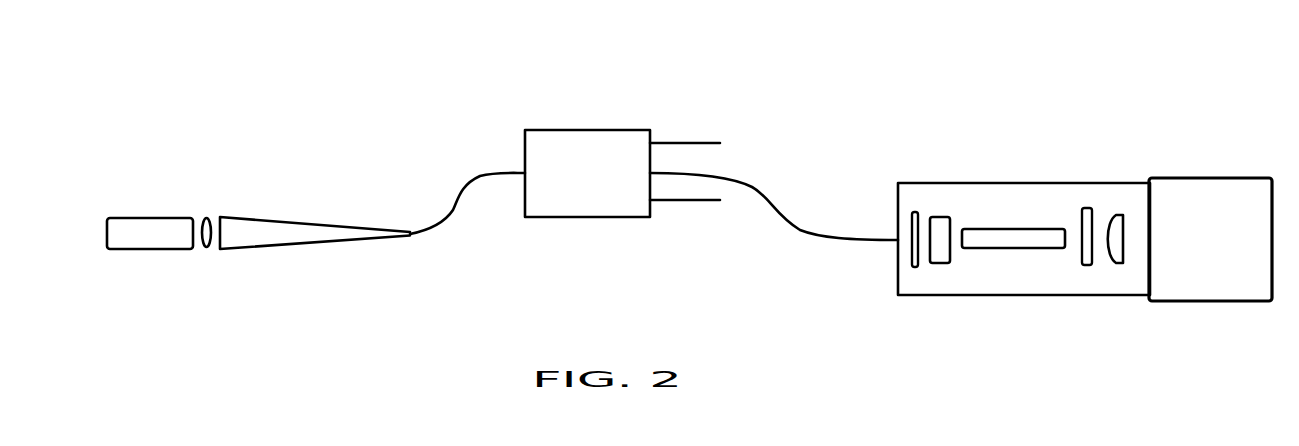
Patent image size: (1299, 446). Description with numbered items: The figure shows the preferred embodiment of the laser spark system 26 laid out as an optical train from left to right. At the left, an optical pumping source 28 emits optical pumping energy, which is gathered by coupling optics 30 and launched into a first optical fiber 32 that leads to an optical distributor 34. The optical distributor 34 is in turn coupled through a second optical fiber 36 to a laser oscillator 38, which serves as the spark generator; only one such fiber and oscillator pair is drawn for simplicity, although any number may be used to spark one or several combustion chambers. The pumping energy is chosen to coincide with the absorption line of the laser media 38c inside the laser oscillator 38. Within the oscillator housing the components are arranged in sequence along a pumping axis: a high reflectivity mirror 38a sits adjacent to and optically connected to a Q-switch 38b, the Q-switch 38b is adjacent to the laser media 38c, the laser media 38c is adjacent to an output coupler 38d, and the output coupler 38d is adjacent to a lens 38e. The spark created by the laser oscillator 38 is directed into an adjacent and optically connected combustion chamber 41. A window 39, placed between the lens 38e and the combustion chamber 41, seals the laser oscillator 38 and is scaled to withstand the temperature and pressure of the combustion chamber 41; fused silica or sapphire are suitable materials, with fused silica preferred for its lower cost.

The laser spark system 26 is at (673, 105).
The optical pumping source 28 is at (127, 218).
The coupling optics 30 is at (310, 240).
The first optical fiber 32 is at (422, 228).
The optical distributor 34 is at (602, 192).
The second optical fiber 36 is at (762, 189).
The laser oscillator 38 is at (1013, 200).
The high reflectivity mirror 38a is at (915, 211).
The Q-switch 38b is at (935, 263).
The laser media 38c is at (1052, 238).
The output coupler 38d is at (1090, 255).
The lens 38e is at (1113, 237).
The window 39 is at (1152, 260).
The combustion chamber 41 is at (1210, 239).